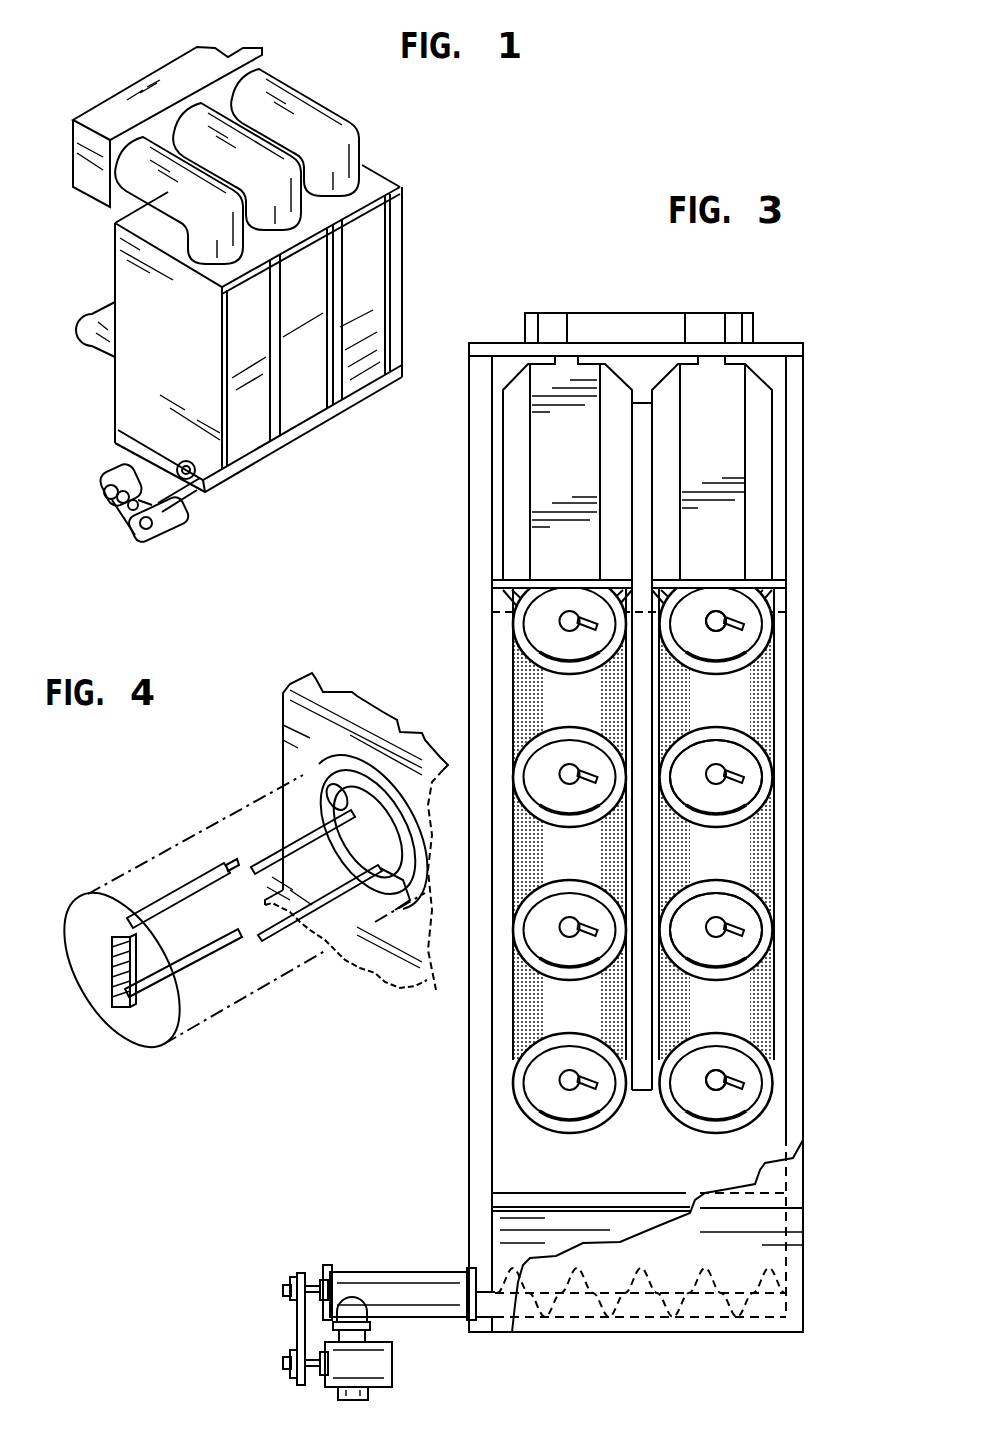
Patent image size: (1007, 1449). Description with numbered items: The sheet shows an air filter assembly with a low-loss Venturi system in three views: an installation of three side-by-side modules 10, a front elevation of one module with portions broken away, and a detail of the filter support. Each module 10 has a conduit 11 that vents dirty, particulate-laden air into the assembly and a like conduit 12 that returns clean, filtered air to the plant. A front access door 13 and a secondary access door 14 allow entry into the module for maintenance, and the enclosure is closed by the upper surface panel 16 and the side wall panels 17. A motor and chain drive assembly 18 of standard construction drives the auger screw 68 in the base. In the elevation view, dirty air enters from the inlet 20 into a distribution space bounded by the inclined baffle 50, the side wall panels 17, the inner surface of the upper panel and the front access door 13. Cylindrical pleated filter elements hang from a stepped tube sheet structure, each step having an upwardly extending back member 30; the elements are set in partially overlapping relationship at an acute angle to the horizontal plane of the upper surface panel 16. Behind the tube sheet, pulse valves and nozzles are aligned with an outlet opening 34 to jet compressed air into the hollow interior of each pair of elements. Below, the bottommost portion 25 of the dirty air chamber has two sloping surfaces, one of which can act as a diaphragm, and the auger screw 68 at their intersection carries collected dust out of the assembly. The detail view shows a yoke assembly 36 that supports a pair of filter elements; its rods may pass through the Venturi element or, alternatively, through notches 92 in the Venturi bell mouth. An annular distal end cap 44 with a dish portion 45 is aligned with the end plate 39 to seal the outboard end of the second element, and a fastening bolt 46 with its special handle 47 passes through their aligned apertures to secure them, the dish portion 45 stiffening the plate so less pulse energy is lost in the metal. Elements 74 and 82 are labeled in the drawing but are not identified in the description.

In FIG. 1, the module 10 is at (384, 151).
In FIG. 3, the module 10 is at (430, 1183).
In FIG. 1, the conduit 11 is at (292, 113).
In FIG. 1, the conduit 12 is at (98, 318).
In FIG. 1, the front access door 13 is at (253, 441).
In FIG. 1, the secondary access door 14 is at (397, 287).
In FIG. 1, the upper surface panel 16 is at (368, 184).
In FIG. 1, the side wall panels 17 is at (138, 387).
In FIG. 3, the side wall panels 17 is at (486, 639).
In FIG. 1, the motor and chain drive assembly 18 is at (180, 552).
In FIG. 3, the motor and chain drive assembly 18 is at (280, 1305).
In FIG. 3, the inlet 20 is at (673, 311).
In FIG. 3, the bottommost portion 25 is at (517, 1147).
In FIG. 4, the back member 30 is at (297, 718).
In FIG. 4, the outlet opening 34 is at (357, 842).
In FIG. 4, the yoke assembly 36 is at (198, 842).
In FIG. 4, the end plate 39 is at (118, 990).
In FIG. 3, the annular distal end cap 44 is at (760, 777).
In FIG. 3, the dish portion 45 is at (722, 798).
In FIG. 3, the fastening bolt 46 is at (724, 624).
In FIG. 3, the special handle 47 is at (740, 936).
In FIG. 3, the inclined baffle 50 is at (740, 467).
In FIG. 3, the auger screw 68 is at (640, 1283).
In FIG. 4, the opening 74 is at (342, 795).
In FIG. 4, the broken edge 82 is at (352, 956).
In FIG. 4, the notches 92 is at (359, 895).